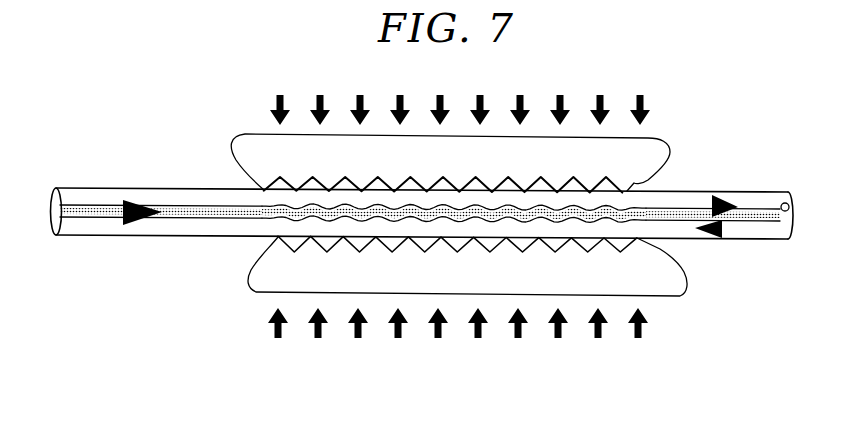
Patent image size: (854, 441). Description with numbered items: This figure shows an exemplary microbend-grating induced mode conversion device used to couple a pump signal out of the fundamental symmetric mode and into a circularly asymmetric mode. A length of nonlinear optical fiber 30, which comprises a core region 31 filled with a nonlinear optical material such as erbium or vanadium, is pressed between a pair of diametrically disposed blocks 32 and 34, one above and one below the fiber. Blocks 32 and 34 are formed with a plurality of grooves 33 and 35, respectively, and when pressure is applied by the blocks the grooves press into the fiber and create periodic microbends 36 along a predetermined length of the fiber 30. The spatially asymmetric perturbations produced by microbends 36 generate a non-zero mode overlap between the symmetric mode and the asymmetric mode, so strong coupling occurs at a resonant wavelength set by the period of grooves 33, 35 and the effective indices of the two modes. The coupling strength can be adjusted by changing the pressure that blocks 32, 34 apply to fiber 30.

The fiber 30 is at (93, 196).
The core region 31 is at (190, 216).
The block 32 is at (475, 150).
The grooves 33 is at (318, 180).
The block 34 is at (444, 278).
The grooves 35 is at (405, 248).
The periodic microbends 36 is at (538, 219).